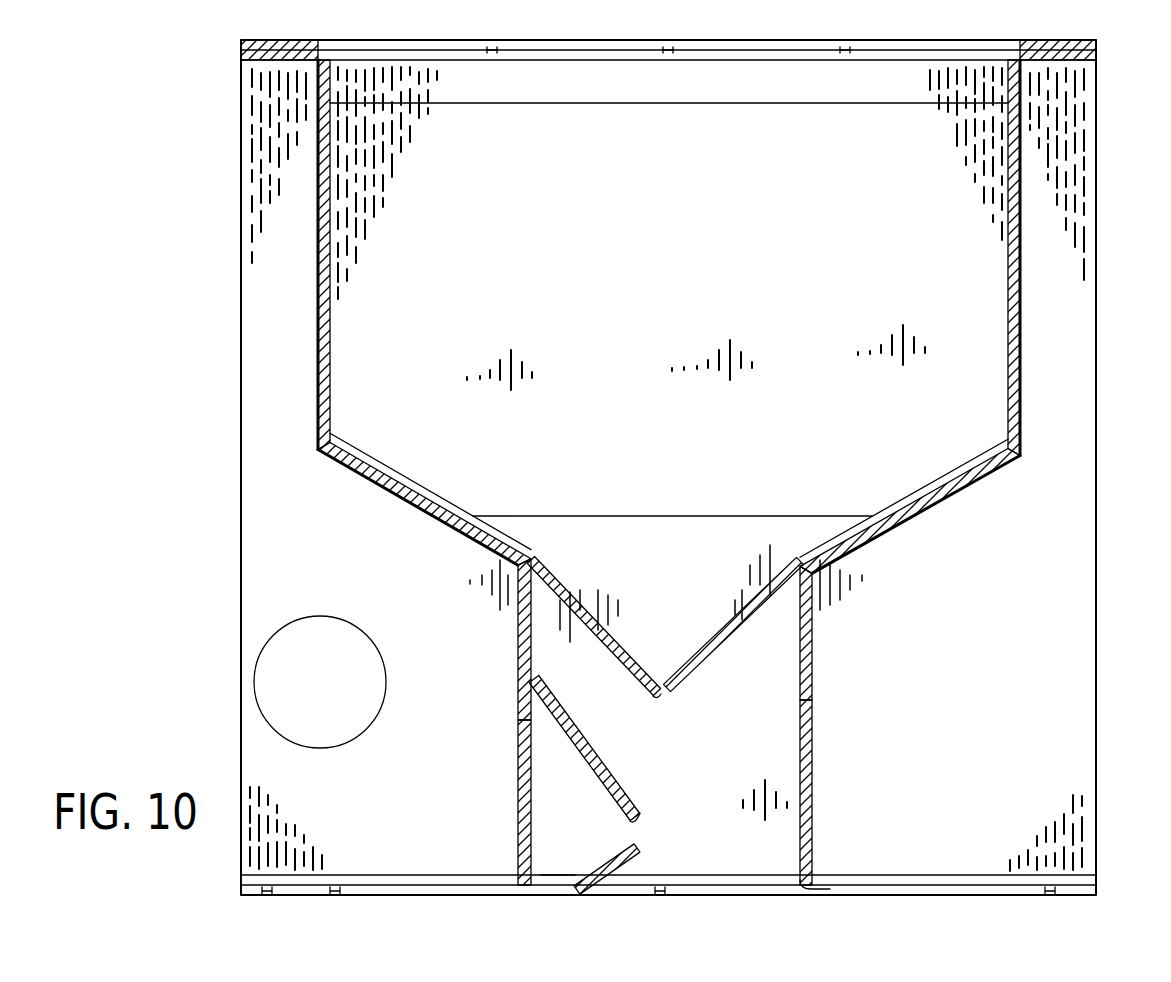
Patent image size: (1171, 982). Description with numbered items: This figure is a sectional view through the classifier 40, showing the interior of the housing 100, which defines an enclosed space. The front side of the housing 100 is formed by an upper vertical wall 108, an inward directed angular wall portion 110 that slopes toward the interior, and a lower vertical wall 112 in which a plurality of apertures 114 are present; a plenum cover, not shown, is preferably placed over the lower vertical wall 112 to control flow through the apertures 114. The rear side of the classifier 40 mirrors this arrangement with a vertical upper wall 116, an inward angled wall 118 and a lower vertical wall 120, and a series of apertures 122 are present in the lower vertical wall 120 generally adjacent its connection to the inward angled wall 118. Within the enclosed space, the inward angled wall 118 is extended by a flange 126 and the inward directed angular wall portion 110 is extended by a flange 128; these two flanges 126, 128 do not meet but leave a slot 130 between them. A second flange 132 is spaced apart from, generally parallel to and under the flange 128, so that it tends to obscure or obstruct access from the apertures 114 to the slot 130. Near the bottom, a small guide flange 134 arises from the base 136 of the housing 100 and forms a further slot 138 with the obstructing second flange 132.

The classifier 40 is at (1097, 274).
The housing 100 is at (668, 95).
The upper vertical wall 108 is at (318, 223).
The inward directed angular wall portion 110 is at (422, 508).
The lower vertical wall 112 is at (520, 616).
The apertures 114 is at (517, 745).
The vertical upper wall 116 is at (1019, 347).
The inward angled wall 118 is at (930, 504).
The lower vertical wall 120 is at (814, 732).
The apertures 122 is at (814, 622).
The flange 126 is at (728, 634).
The flange 128 is at (577, 606).
The slot 130 is at (664, 696).
The second flange 132 is at (577, 727).
The small guide flange 134 is at (625, 852).
The base 136 is at (544, 874).
The slot 138 is at (636, 830).